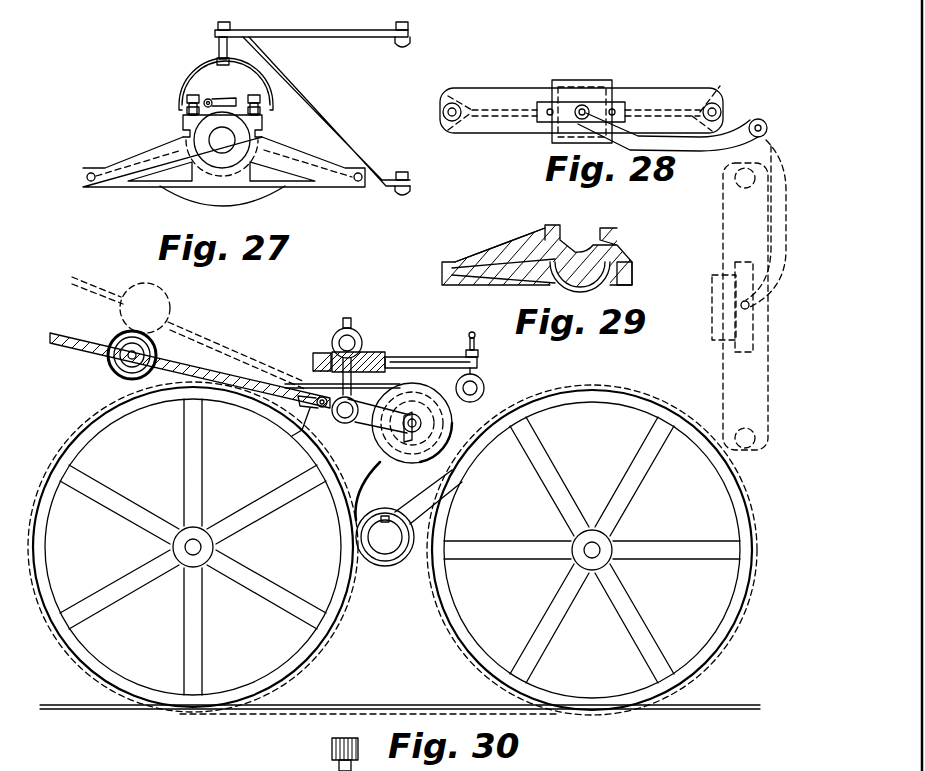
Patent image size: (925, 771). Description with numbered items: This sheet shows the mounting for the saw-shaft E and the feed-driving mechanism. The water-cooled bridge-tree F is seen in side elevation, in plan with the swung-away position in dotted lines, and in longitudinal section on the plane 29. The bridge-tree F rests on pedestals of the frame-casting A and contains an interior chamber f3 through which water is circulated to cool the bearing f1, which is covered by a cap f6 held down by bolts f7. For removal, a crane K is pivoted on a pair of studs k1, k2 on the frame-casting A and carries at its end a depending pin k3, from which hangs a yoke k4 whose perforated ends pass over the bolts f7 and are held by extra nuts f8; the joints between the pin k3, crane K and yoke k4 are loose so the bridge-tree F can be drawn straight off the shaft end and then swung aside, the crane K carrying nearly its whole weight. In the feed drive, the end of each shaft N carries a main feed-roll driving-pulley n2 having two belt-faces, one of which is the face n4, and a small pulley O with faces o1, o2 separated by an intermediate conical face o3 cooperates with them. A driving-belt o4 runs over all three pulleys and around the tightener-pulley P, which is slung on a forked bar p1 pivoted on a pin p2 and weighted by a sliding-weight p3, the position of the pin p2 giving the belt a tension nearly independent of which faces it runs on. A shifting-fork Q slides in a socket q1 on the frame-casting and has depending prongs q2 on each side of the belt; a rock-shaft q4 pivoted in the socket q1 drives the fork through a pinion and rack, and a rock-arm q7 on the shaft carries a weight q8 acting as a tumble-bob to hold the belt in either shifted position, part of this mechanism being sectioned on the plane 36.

In FIG. 27, the frame-casting A is at (408, 45).
In FIG. 27, the crane K is at (337, 40).
In FIG. 28, the crane K is at (692, 152).
In FIG. 27, the stud k1 is at (409, 27).
In FIG. 27, the stud k2 is at (409, 177).
In FIG. 27, the depending pin k3 is at (218, 41).
In FIG. 28, the depending pin k3 is at (583, 104).
In FIG. 27, the yoke k4 is at (190, 82).
In FIG. 28, the yoke k4 is at (553, 100).
In FIG. 27, the bridge-tree F is at (152, 152).
In FIG. 28, the bridge-tree F is at (650, 92).
In FIG. 29, the bridge-tree F is at (548, 235).
In FIG. 27, the bearing f1 is at (222, 159).
In FIG. 28, the bearing f1 is at (560, 136).
In FIG. 29, the bearing f1 is at (576, 247).
In FIG. 27, the interior chamber f3 is at (86, 177).
In FIG. 28, the interior chamber f3 is at (700, 102).
In FIG. 29, the interior chamber f3 is at (622, 256).
In FIG. 27, the cap f6 is at (263, 124).
In FIG. 28, the cap f6 is at (614, 94).
In FIG. 27, the bolt f7 is at (209, 98).
In FIG. 28, the bolt f7 is at (548, 117).
In FIG. 27, the extra nut f8 is at (186, 106).
In FIG. 27, the section plane 29 is at (430, 134).
In FIG. 28, the section plane 29 is at (642, 103).
In FIG. 30, the shaft N is at (190, 547).
In FIG. 30, the main feed-roll driving-pulley n2 is at (296, 622).
In FIG. 30, the belt-face n4 is at (330, 618).
In FIG. 30, the face o1 is at (388, 492).
In FIG. 30, the face o2 is at (382, 566).
In FIG. 30, the intermediate conical face o3 is at (406, 512).
In FIG. 30, the driving-belt o4 is at (326, 705).
In FIG. 30, the small pulley O is at (396, 564).
In FIG. 30, the saw-shaft E is at (370, 538).
In FIG. 30, the tightener-pulley P is at (452, 418).
In FIG. 30, the forked bar p1 is at (67, 334).
In FIG. 30, the pin p2 is at (349, 423).
In FIG. 30, the sliding-weight p3 is at (110, 368).
In FIG. 30, the shifting-fork Q is at (352, 332).
In FIG. 30, the socket q1 is at (325, 352).
In FIG. 30, the depending prong q2 is at (380, 352).
In FIG. 30, the rock-shaft q4 is at (430, 356).
In FIG. 30, the rock-arm q7 is at (478, 342).
In FIG. 30, the weight q8 is at (485, 384).
In FIG. 30, the section plane 36 is at (348, 735).